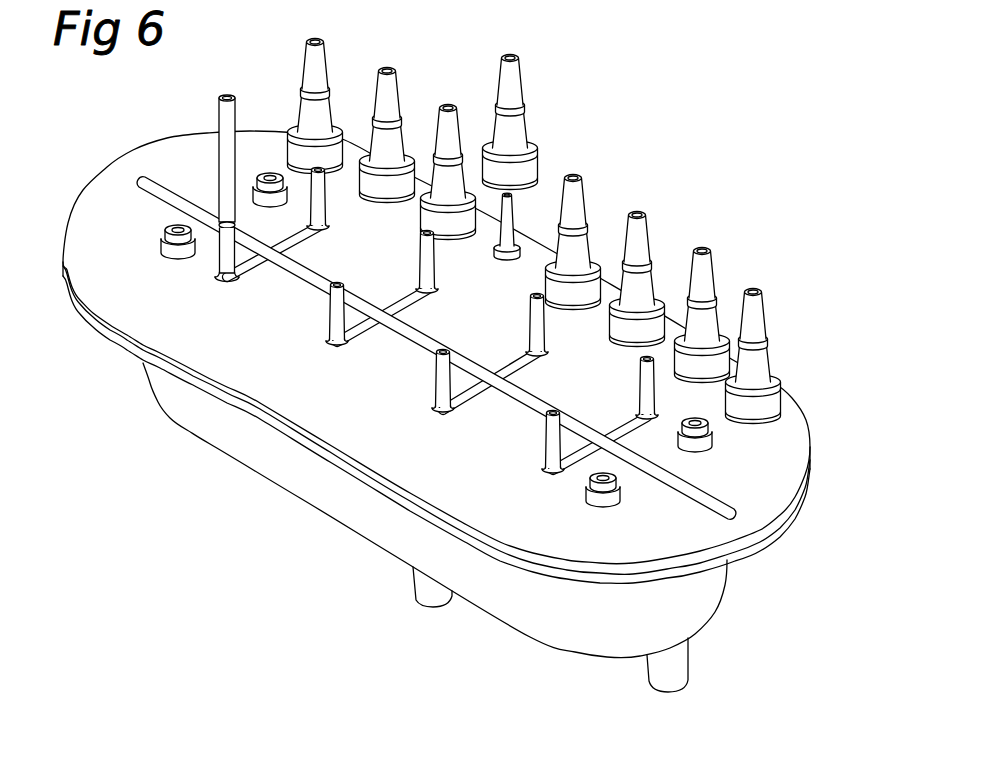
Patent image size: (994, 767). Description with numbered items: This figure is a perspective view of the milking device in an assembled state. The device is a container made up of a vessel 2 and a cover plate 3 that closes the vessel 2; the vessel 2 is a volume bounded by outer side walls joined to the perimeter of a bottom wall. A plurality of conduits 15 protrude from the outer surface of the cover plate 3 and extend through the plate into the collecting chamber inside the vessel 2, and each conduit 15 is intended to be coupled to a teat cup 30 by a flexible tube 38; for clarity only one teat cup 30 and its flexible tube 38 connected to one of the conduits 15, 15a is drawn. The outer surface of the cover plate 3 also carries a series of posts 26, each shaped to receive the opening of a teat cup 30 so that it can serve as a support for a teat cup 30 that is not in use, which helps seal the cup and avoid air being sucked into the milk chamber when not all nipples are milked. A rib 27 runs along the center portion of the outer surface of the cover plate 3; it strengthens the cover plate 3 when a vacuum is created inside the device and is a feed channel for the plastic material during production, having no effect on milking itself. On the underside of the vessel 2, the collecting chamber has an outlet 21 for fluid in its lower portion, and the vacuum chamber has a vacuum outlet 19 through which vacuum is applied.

The vessel 2 is at (257, 467).
The cover plate 3 is at (112, 197).
The conduit 15 is at (427, 327).
The pins on rails 15a is at (333, 308).
The vacuum outlet 19 is at (670, 667).
The outlet 21 is at (418, 594).
The post 26 is at (513, 207).
The rib 27 is at (710, 503).
The teat cup 30 is at (345, 50).
The flexible tube 38 is at (227, 94).